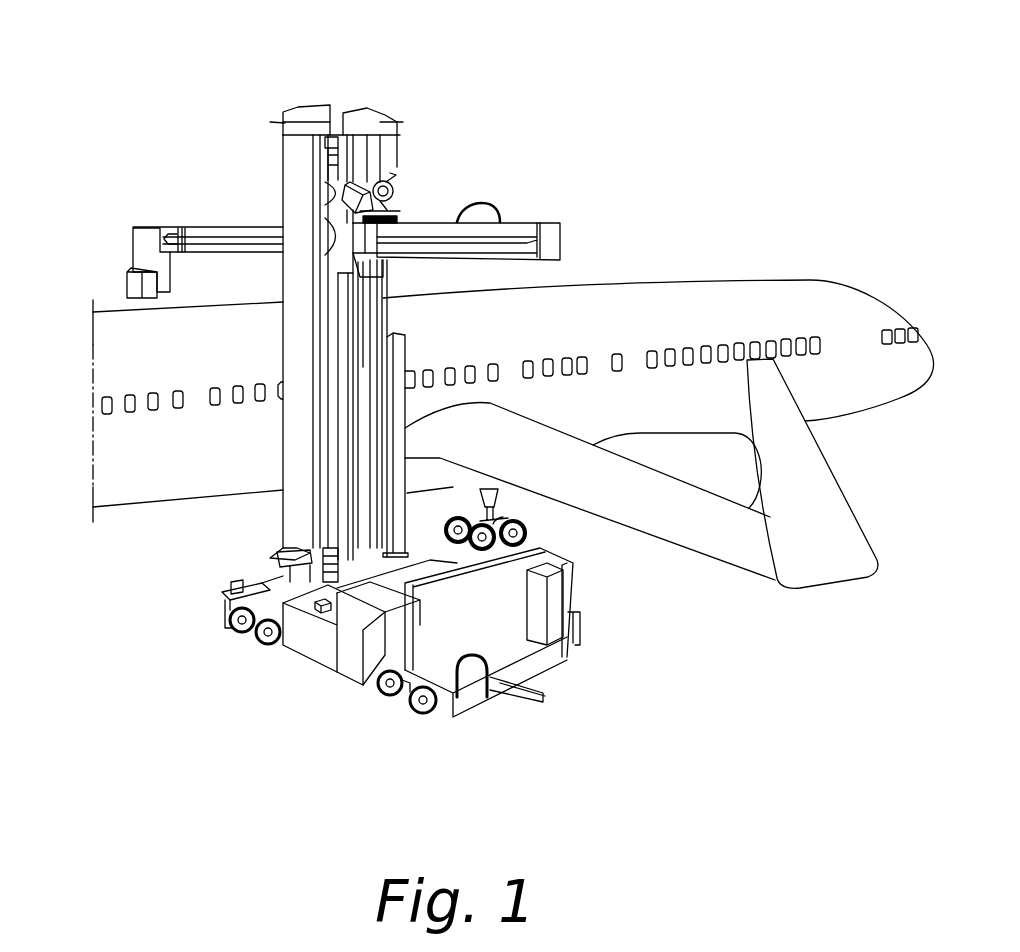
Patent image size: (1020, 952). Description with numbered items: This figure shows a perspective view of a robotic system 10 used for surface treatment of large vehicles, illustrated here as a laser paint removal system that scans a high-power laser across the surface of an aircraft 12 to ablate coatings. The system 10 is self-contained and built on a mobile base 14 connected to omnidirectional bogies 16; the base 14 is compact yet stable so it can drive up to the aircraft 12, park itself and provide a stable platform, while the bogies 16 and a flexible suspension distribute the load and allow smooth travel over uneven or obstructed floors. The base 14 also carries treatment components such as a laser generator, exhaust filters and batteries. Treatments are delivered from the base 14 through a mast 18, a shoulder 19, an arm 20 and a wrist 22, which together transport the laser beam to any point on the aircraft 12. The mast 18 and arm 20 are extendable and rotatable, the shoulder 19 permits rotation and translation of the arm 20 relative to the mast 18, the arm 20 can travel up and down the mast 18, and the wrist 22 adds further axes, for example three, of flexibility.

The robotic system 10 is at (515, 95).
The aircraft 12 is at (837, 305).
The mobile base 14 is at (313, 674).
The omnidirectional bogies 16 is at (240, 645).
The mast 18 is at (277, 511).
The shoulder 19 is at (404, 151).
The arm 20 is at (225, 217).
The wrist 22 is at (120, 263).